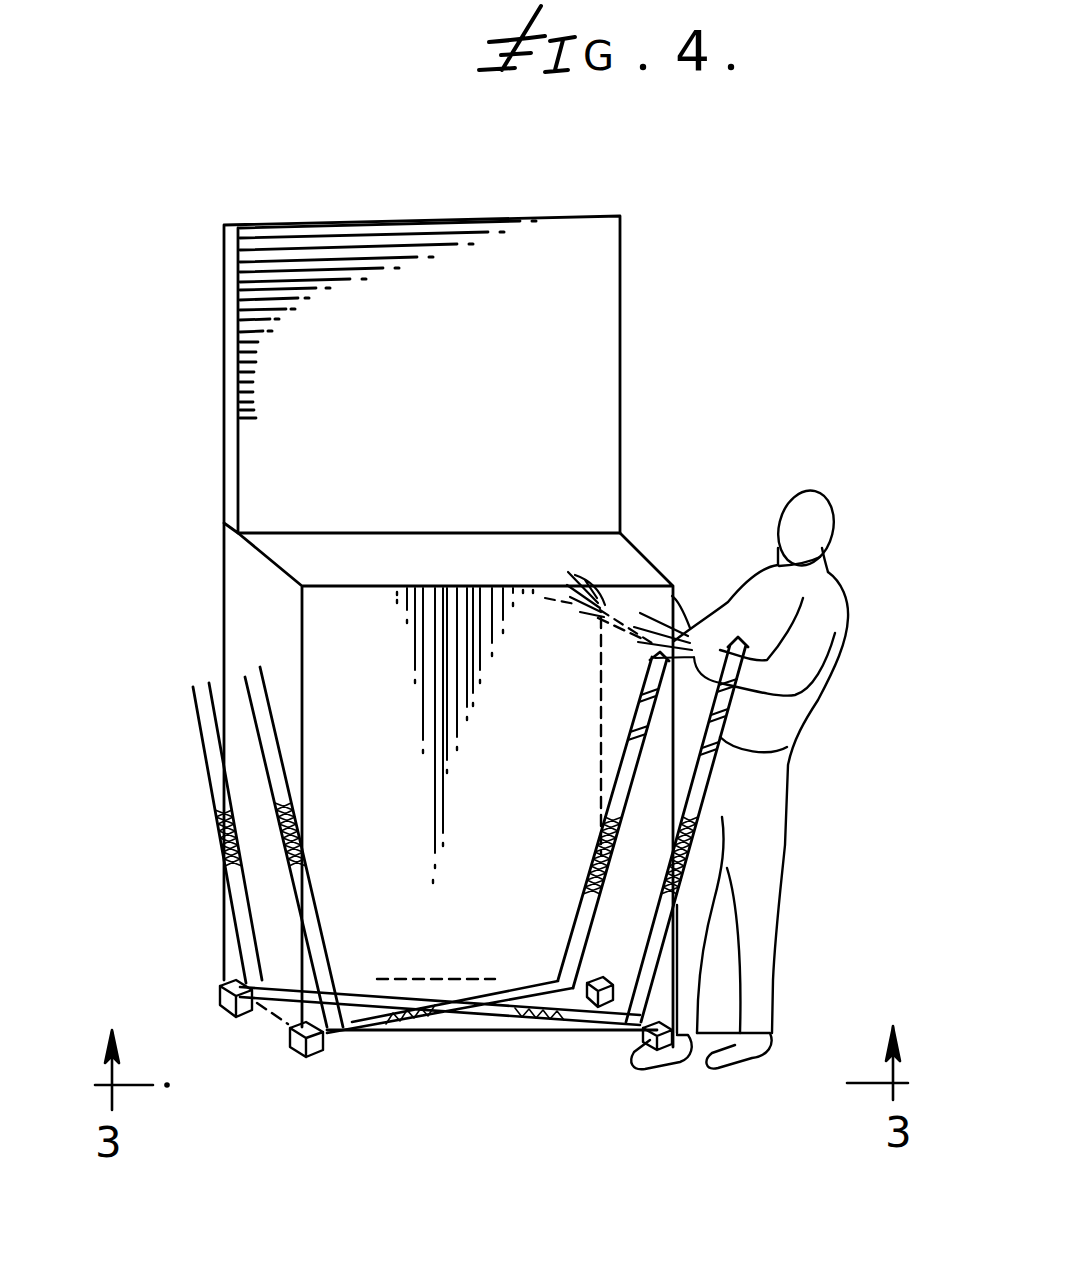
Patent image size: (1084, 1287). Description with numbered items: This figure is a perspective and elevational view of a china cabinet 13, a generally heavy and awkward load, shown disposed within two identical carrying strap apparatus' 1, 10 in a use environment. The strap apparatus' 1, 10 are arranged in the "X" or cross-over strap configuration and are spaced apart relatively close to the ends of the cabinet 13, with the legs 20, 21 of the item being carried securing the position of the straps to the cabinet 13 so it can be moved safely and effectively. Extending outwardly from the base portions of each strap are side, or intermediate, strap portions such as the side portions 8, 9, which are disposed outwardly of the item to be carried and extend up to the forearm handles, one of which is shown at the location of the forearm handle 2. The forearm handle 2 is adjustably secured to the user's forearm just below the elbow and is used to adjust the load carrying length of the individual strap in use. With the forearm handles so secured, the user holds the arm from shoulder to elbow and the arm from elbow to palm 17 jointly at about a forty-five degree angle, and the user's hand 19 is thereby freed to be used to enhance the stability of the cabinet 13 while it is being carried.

The carrying strap apparatus 1 is at (363, 860).
The forearm handle 2 is at (735, 697).
The side strap portion 8 is at (616, 792).
The side strap portion 9 is at (207, 758).
The carrying strap apparatus 10 is at (222, 906).
The china cabinet 13 is at (380, 218).
The arm from elbow to palm 17 is at (763, 677).
The hand 19 is at (682, 627).
The leg 20 is at (315, 1057).
The leg 21 is at (637, 1050).